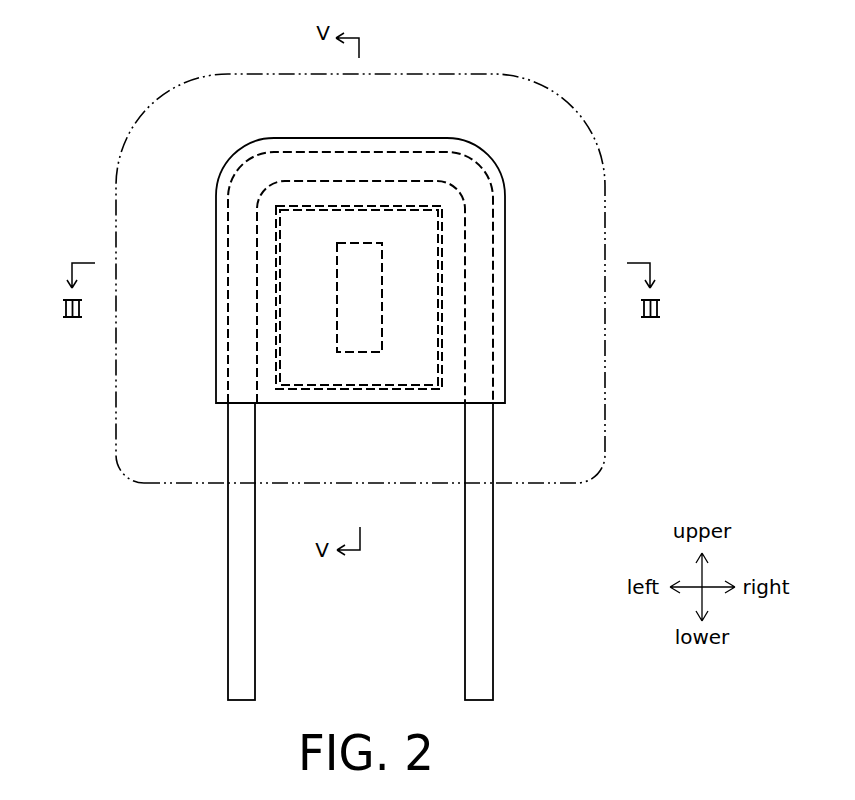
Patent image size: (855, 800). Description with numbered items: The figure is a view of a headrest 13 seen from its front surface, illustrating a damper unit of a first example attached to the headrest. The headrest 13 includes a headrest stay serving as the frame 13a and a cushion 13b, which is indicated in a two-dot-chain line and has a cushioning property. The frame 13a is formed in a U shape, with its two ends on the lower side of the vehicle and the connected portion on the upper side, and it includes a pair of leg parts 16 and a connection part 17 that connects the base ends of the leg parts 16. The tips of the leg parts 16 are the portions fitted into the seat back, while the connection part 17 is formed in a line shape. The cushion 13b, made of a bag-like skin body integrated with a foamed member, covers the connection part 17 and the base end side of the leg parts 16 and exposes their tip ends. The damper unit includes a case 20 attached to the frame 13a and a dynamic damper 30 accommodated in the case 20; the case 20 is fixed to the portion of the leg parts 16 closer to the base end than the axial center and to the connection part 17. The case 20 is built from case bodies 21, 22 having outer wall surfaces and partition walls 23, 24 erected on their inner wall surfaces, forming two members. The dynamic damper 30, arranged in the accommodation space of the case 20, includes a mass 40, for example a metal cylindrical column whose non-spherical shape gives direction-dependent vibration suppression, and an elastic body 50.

The headrest 13 is at (392, 255).
The frame 13a is at (360, 209).
The cushion 13b is at (478, 73).
The leg part 16 is at (228, 597).
The connection part 17 is at (383, 147).
The case 20 is at (470, 276).
The case body 21 is at (451, 270).
The case body 22 is at (505, 335).
The partition wall 23 is at (481, 310).
The partition wall 24 is at (438, 362).
The dynamic damper 30 is at (230, 312).
The mass 40 is at (337, 308).
The elastic body 50 is at (308, 347).